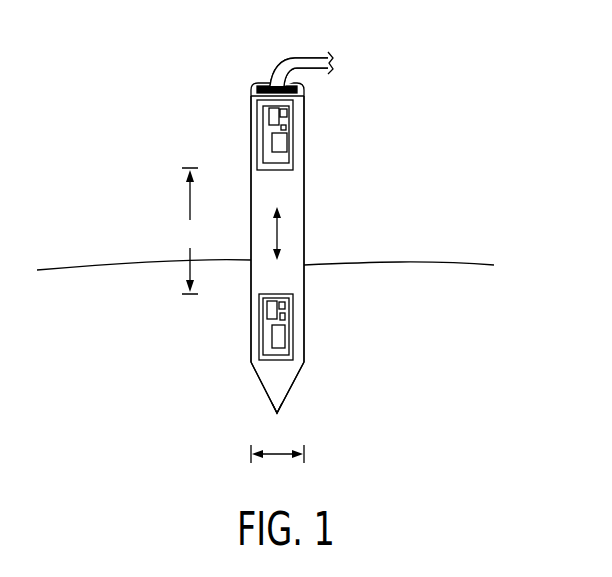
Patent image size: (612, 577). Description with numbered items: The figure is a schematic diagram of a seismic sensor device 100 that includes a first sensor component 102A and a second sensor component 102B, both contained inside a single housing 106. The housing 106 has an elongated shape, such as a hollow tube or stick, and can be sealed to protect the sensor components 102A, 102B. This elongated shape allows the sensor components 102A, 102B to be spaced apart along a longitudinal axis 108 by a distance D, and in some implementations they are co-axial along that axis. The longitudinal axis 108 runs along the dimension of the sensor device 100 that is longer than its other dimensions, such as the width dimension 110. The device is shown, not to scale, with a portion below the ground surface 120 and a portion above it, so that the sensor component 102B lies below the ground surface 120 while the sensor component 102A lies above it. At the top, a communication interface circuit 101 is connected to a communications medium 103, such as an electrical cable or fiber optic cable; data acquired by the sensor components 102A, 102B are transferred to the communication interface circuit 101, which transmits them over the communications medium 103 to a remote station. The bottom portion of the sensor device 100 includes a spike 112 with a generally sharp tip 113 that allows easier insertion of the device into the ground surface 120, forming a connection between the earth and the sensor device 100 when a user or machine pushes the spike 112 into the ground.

The seismic sensor device 100 is at (308, 181).
The communication interface circuit 101 is at (253, 91).
The first sensor component 102A is at (257, 134).
The second sensor component 102B is at (259, 317).
The communications medium 103 is at (280, 64).
The housing 106 is at (251, 229).
The longitudinal axis 108 is at (279, 232).
The width dimension 110 is at (277, 456).
The spike 112 is at (265, 390).
The sharp tip 113 is at (277, 413).
The ground surface 120 is at (92, 268).
The distance D is at (191, 231).